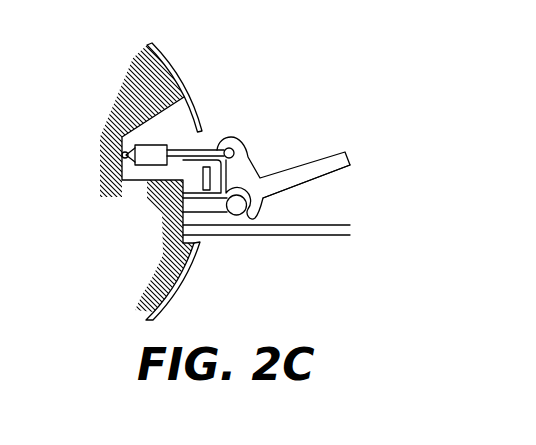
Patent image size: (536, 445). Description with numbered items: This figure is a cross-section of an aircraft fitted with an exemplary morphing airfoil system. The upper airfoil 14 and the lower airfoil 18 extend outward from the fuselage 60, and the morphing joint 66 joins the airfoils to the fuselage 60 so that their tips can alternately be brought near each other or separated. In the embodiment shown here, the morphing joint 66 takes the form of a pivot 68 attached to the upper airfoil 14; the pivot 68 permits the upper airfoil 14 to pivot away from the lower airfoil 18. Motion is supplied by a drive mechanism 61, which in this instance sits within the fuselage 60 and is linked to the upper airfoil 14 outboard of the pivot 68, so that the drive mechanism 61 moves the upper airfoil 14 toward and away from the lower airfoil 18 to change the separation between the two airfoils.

The fuselage 60 is at (168, 61).
The drive mechanism 61 is at (148, 166).
The morphing joint 66 is at (266, 165).
The upper airfoil 14 is at (307, 178).
The lower airfoil 18 is at (298, 236).
The pivot 68 is at (237, 213).